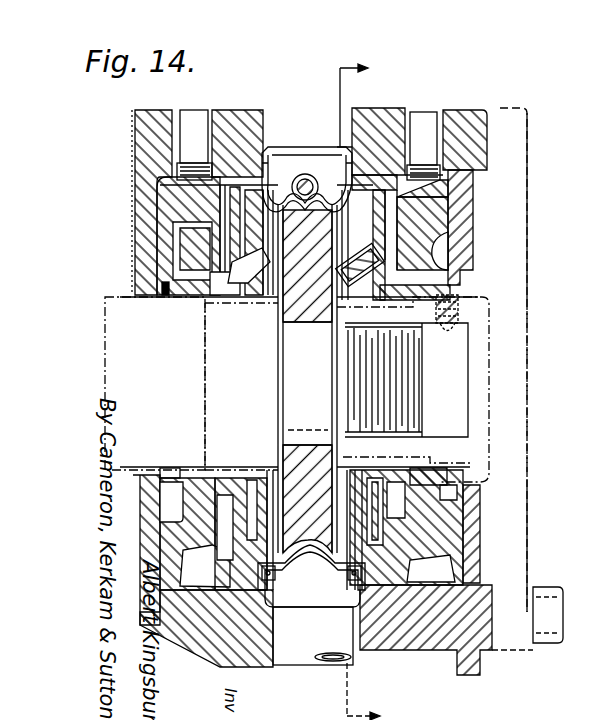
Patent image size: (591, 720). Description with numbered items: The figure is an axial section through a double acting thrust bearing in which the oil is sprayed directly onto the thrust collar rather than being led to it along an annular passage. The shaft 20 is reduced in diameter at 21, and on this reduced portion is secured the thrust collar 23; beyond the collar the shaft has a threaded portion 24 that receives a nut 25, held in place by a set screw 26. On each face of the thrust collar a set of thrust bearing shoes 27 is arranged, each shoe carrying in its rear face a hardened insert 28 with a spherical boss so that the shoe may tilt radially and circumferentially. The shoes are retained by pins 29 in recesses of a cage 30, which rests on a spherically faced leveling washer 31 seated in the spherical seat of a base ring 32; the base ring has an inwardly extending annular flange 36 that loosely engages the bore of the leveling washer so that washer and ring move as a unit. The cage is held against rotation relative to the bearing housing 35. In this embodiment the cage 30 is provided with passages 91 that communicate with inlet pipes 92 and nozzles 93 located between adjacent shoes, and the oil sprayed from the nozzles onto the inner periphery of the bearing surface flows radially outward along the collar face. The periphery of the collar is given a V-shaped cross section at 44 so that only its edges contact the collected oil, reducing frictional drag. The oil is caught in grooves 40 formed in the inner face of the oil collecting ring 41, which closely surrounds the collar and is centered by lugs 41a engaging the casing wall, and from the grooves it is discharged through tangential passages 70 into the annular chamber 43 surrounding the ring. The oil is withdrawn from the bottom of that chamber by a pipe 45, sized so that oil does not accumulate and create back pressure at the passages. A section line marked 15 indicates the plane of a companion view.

The section line 15 is at (373, 391).
The shaft 20 is at (148, 420).
The reduced diameter portion 21 is at (292, 366).
The thrust collar 23 is at (292, 324).
The threaded portion 24 is at (405, 407).
The nut 25 is at (395, 316).
The set screw 26 is at (446, 332).
The thrust bearing shoes 27 is at (232, 588).
The hardened insert 28 is at (250, 470).
The pins 29 is at (238, 585).
The cage 30 is at (222, 176).
The leveling washer 31 is at (166, 282).
The base ring 32 is at (176, 250).
The bearing housing 35 is at (391, 124).
The annular flange 36 is at (176, 468).
The grooves 40 is at (333, 570).
The oil collecting ring 41 is at (305, 148).
The centering lugs 41a is at (362, 166).
The annular chamber 43 is at (280, 186).
The V-shaped periphery 44 is at (310, 550).
The pipe 45 is at (293, 655).
The tangential passages 70 is at (372, 174).
The passages 91 is at (225, 226).
The inlet pipes 92 is at (190, 124).
The nozzles 93 is at (262, 258).